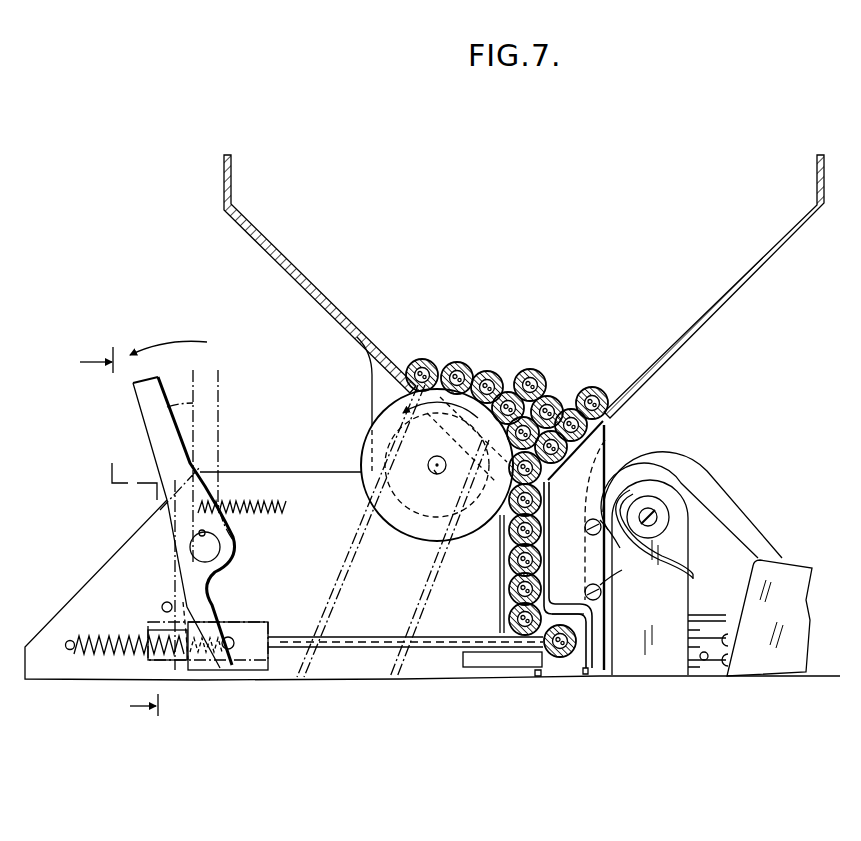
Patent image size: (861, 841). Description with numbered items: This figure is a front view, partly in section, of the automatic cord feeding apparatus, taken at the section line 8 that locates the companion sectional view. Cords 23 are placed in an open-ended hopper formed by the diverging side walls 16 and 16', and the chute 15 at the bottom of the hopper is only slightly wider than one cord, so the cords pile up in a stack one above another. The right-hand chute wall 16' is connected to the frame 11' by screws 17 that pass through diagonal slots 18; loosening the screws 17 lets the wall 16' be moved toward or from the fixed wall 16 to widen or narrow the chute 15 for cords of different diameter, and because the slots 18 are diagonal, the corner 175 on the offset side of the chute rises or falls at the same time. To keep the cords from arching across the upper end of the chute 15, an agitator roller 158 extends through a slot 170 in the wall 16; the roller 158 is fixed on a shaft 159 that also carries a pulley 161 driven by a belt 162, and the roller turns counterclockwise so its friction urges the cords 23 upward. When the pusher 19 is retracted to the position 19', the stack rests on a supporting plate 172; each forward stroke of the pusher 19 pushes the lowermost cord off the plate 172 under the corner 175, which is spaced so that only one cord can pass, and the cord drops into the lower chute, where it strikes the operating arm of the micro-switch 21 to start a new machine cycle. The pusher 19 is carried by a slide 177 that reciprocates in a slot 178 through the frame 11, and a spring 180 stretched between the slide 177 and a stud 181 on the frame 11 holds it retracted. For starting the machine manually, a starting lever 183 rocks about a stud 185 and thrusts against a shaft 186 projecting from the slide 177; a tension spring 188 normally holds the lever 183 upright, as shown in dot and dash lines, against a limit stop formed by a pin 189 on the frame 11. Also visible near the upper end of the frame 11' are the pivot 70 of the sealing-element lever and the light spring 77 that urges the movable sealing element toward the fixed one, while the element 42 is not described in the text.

The section line 8- 8 is at (156, 537).
The frame 11 is at (432, 508).
The frame 11' is at (693, 563).
The chute 15 is at (552, 522).
The chute wall 16 is at (320, 274).
The right-hand chute wall 16' is at (686, 317).
The screws 17 is at (585, 529).
The diagonal slots 18 is at (603, 590).
The pusher 19 is at (470, 679).
The retracted pusher position 19' is at (515, 685).
The micro-switch 21 is at (788, 567).
The cords 23 is at (524, 372).
The spring housing 42 is at (180, 662).
The pivot 70 is at (669, 517).
The spring 77 is at (690, 568).
The agitator roller 158 is at (366, 492).
The shaft 159 is at (432, 473).
The pulley 161 is at (436, 476).
The belt 162 is at (345, 565).
The slot 170 is at (385, 400).
The supporting plate 172 is at (512, 662).
The corner 175 is at (585, 614).
The slide 177 is at (225, 622).
The slot 178 is at (283, 636).
The spring 180 is at (126, 640).
The stud 181 is at (66, 647).
The starting lever 183 is at (156, 425).
The stud 185 is at (222, 546).
The shaft 186 is at (237, 648).
The tension spring 188 is at (262, 500).
The pin 189 is at (163, 602).